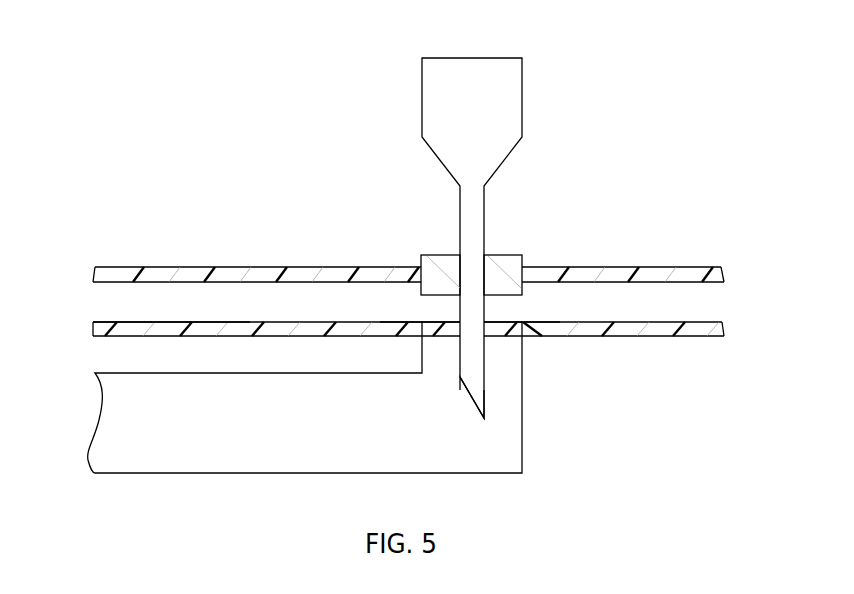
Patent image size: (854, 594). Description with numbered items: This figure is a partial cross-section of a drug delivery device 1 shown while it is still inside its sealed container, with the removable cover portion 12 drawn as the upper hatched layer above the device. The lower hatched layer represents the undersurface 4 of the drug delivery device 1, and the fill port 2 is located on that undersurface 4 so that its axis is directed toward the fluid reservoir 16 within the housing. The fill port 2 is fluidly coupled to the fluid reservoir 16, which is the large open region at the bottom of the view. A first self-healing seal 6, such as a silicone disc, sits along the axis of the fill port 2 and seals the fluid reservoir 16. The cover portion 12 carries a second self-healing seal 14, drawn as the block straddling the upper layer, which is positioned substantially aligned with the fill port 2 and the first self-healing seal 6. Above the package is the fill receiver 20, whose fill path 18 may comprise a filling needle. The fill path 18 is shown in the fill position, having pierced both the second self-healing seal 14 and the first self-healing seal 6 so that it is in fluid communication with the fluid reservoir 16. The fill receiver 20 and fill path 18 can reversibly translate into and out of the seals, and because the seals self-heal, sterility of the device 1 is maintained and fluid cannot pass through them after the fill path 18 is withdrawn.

The drug delivery device 1 is at (695, 322).
The fill port 2 is at (512, 322).
The undersurface 4 is at (108, 322).
The first self-healing seal 6 is at (440, 322).
The removable cover portion 12 is at (702, 268).
The second self-healing seal 14 is at (513, 252).
The fluid reservoir 16 is at (289, 431).
The fill path 18 is at (472, 362).
The fill receiver 20 is at (522, 97).